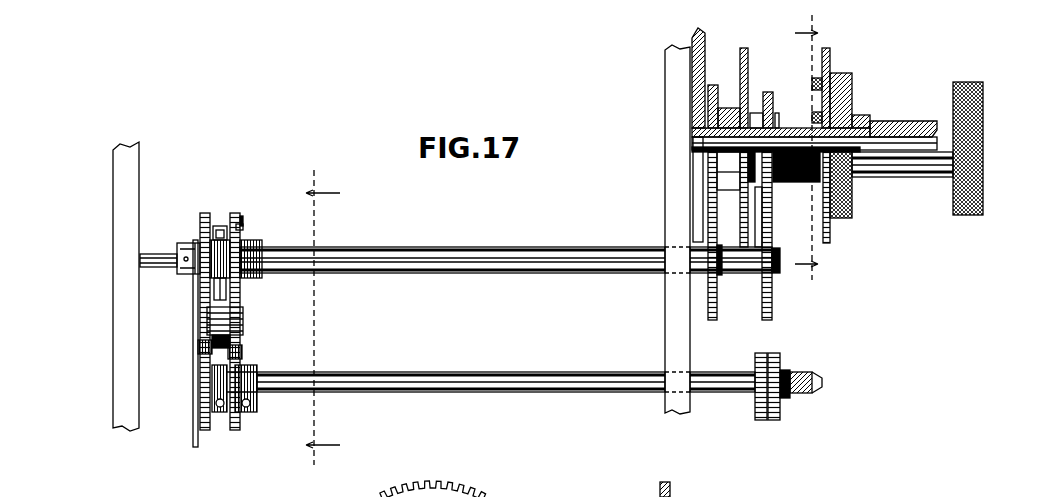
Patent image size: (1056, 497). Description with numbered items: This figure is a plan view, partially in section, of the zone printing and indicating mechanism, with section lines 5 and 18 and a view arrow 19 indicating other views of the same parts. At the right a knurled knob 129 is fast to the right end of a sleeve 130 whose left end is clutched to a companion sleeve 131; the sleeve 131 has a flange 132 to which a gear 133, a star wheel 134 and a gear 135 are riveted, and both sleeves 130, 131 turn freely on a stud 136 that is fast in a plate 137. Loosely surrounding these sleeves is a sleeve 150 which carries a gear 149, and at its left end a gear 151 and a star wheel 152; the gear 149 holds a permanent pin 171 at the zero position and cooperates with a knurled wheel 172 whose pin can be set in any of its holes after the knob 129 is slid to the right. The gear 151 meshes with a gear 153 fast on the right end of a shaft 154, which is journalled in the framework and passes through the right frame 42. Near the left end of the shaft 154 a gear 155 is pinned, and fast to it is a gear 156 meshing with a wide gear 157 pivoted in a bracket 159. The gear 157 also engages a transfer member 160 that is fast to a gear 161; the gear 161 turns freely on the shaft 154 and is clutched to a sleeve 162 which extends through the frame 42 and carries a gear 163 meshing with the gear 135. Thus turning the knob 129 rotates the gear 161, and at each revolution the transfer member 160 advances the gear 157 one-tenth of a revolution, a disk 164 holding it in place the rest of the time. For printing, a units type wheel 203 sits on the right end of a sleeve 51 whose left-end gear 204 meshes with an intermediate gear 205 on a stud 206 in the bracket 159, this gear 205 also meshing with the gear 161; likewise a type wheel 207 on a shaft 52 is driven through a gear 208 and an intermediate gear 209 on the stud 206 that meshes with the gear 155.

The right frame 42 is at (113, 325).
The sleeve 51 is at (400, 372).
The shaft 52 is at (808, 395).
The knurled knob 129 is at (983, 103).
The sleeve 130 is at (918, 121).
The companion sleeve 131 is at (786, 128).
The flange 132 is at (755, 113).
The gear 133 is at (745, 56).
The star wheel 134 is at (730, 108).
The gear 135 is at (712, 85).
The stud 136 is at (889, 121).
The plate 137 is at (692, 46).
The gear 149 is at (830, 235).
The sleeve 150 is at (800, 176).
The gear 151 is at (758, 204).
The star wheel 152 is at (757, 190).
The gear 153 is at (772, 294).
The shaft 154 is at (153, 268).
The gear 155 is at (205, 215).
The gear 156 is at (213, 228).
The gear 157 is at (228, 215).
The bracket 159 is at (193, 440).
The transfer member 160 is at (250, 240).
The gear 161 is at (241, 226).
The sleeve 162 is at (364, 247).
The gear 163 is at (712, 320).
The disk 164 is at (241, 218).
The permanent pin 171 is at (812, 83).
The knurled wheel 172 is at (852, 207).
The units type wheel 203 is at (758, 421).
The gear 204 is at (234, 430).
The intermediate gear 205 is at (240, 355).
The stud 206 is at (243, 328).
The type wheel 207 is at (773, 421).
The gear 208 is at (207, 430).
The intermediate gear 209 is at (203, 346).
The section line 5- 5 is at (317, 320).
The section line 18- 18 is at (819, 147).
The view arrow 19 is at (503, 485).